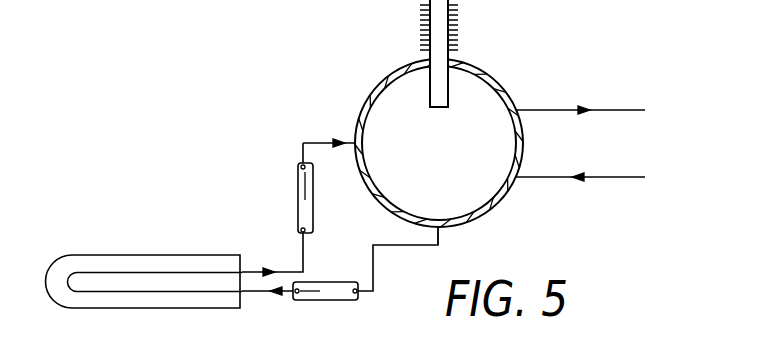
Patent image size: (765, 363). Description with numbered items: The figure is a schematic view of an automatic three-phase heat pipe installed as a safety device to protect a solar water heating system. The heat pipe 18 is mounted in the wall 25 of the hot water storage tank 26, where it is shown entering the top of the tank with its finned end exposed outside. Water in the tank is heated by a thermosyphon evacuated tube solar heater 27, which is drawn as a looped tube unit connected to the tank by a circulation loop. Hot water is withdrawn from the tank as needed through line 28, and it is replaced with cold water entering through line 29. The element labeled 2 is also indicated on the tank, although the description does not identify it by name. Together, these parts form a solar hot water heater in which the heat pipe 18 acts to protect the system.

The reactor vessel 2 is at (428, 152).
The heat pipe 18 is at (465, 31).
The wall 25 is at (380, 93).
The hot water storage tank 26 is at (500, 80).
The thermosyphon evacuated tube solar heater 27 is at (128, 255).
The line 28 is at (605, 110).
The line 29 is at (605, 177).